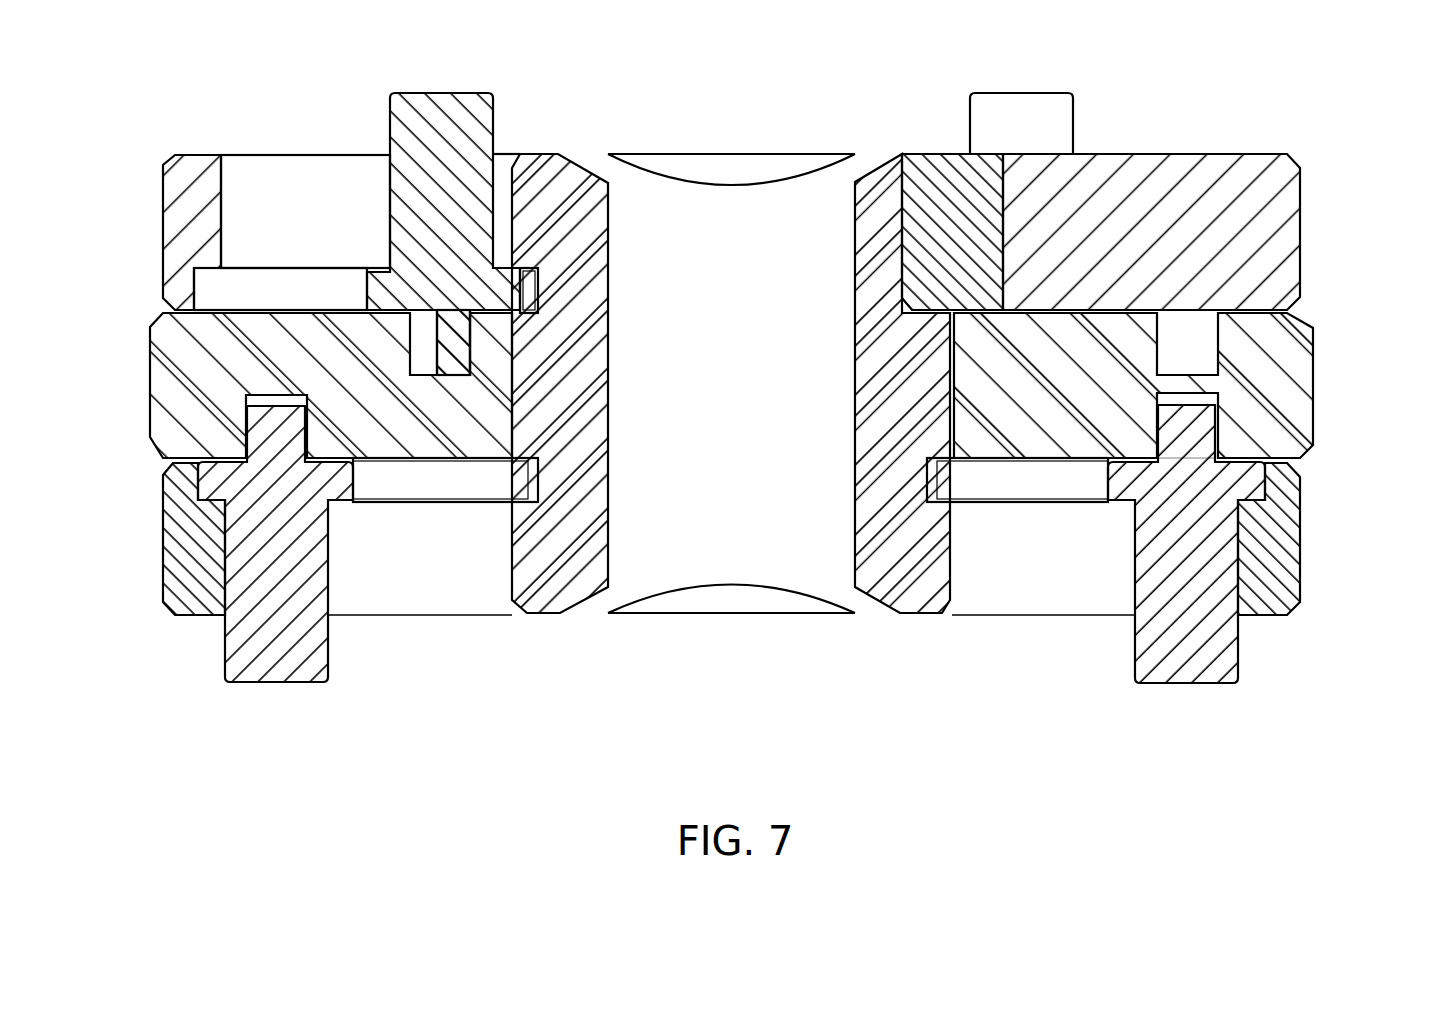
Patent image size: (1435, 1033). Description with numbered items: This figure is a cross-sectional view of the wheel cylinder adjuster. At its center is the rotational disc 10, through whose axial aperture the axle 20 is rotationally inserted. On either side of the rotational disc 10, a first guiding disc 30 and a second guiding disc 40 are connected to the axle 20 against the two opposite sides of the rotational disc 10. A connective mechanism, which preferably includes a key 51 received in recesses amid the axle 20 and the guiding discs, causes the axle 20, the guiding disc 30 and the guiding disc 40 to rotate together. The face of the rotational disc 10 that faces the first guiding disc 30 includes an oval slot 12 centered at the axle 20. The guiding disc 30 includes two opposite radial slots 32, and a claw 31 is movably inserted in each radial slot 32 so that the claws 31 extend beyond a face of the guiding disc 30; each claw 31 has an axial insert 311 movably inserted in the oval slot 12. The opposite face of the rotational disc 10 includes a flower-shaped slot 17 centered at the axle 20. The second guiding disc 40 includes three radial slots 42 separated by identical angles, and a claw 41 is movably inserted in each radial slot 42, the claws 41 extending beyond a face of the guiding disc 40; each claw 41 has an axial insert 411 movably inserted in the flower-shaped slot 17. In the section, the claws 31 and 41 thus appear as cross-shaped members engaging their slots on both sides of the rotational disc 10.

The rotational disc 10 is at (1250, 385).
The oval slot 12 is at (255, 432).
The flower-shaped slot 17 is at (450, 358).
The axle 20 is at (898, 572).
The guiding disc 30 is at (188, 557).
The claw 31 is at (262, 658).
The radial slot 32 is at (1060, 570).
The guiding disc 40 is at (1255, 243).
The claw 41 is at (473, 123).
The axial insert 411 is at (465, 378).
The radial slot 42 is at (298, 177).
The key 51 is at (965, 212).
The axial insert 311 is at (1193, 438).